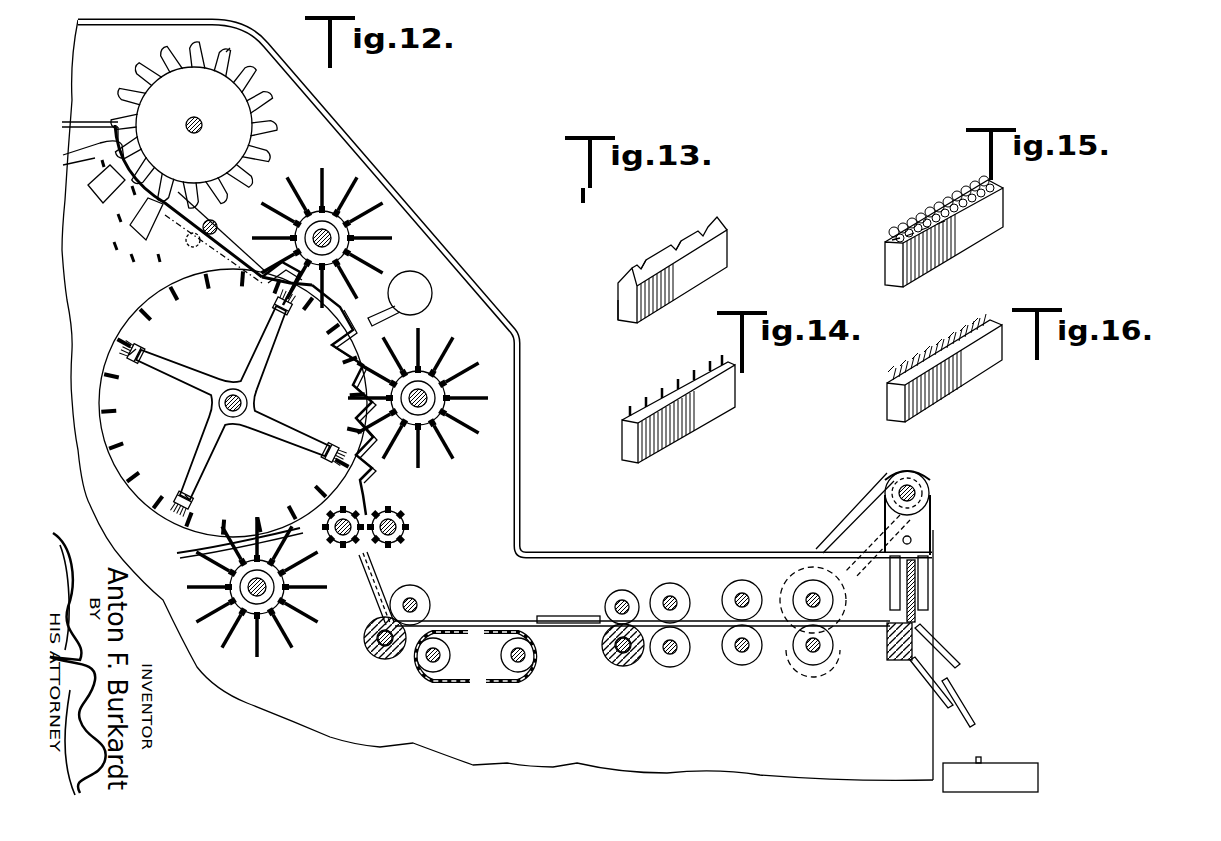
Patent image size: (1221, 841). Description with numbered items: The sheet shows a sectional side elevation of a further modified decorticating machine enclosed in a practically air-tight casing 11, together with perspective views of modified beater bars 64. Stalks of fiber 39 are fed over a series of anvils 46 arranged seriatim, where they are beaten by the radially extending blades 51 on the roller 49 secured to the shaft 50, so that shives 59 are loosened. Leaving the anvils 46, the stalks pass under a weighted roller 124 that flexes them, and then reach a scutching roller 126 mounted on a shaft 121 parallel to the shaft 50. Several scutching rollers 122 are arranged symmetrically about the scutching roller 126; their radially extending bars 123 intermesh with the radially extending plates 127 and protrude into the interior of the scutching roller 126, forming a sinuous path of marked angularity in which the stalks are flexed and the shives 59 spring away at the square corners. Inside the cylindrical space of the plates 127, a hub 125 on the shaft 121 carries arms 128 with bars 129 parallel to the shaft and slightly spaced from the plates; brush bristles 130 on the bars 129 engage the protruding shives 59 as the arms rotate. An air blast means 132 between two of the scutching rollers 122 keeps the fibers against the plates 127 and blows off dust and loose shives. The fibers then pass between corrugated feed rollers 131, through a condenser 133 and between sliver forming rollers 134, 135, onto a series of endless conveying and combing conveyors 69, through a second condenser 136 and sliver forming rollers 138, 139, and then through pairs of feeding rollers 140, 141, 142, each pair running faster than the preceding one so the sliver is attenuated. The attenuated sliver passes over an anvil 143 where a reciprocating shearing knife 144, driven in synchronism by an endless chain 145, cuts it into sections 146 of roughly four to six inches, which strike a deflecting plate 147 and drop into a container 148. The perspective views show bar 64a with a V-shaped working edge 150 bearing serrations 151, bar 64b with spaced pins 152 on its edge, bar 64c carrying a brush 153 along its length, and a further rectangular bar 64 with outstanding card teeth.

In FIG. 12, the casing 11 is at (318, 92).
In FIG. 12, the stalks 39 is at (178, 205).
In FIG. 12, the anvil 46 is at (72, 147).
In FIG. 12, the roller 49 is at (228, 95).
In FIG. 12, the shaft 50 is at (202, 126).
In FIG. 12, the blades 51 is at (222, 60).
In FIG. 12, the shives 59 is at (231, 300).
In FIG. 16, the bars 64 is at (928, 410).
In FIG. 13, the bar 64a is at (620, 316).
In FIG. 14, the bar 64b is at (624, 450).
In FIG. 15, the bar 64c is at (910, 284).
In FIG. 12, the endless conveying and combing conveyors 69 is at (484, 670).
In FIG. 12, the shaft 121 is at (220, 405).
In FIG. 12, the scutching roller 122 is at (350, 232).
In FIG. 12, the radially extending bars 123 is at (350, 210).
In FIG. 12, the weighted roller 124 is at (218, 226).
In FIG. 12, the hub 125 is at (250, 385).
In FIG. 12, the scutching roller 126 is at (134, 488).
In FIG. 12, the radially extending plates 127 is at (100, 394).
In FIG. 12, the arms 128 is at (276, 344).
In FIG. 12, the bars 129 is at (136, 346).
In FIG. 12, the brush bristles 130 is at (128, 352).
In FIG. 12, the corrugated feed rollers 131 is at (409, 523).
In FIG. 12, the air blast means 132 is at (432, 294).
In FIG. 12, the condenser 133 is at (385, 578).
In FIG. 12, the sliver forming roller 134 is at (392, 658).
In FIG. 12, the sliver forming roller 135 is at (430, 602).
In FIG. 12, the condenser 136 is at (546, 617).
In FIG. 12, the sliver forming roller 138 is at (616, 660).
In FIG. 12, the sliver forming roller 139 is at (616, 592).
In FIG. 12, the feeding rollers 140 is at (668, 593).
In FIG. 12, the feeding rollers 141 is at (733, 591).
In FIG. 12, the feeding rollers 142 is at (816, 590).
In FIG. 12, the anvil 143 is at (886, 648).
In FIG. 12, the shearing knife 144 is at (916, 592).
In FIG. 12, the endless chain 145 is at (874, 484).
In FIG. 12, the cut sections 146 is at (950, 664).
In FIG. 12, the deflecting plate 147 is at (930, 690).
In FIG. 12, the container 148 is at (990, 762).
In FIG. 13, the V-shaped working edge 150 is at (716, 222).
In FIG. 13, the serrations 151 is at (664, 254).
In FIG. 14, the pins 152 is at (694, 372).
In FIG. 15, the brush 153 is at (941, 204).